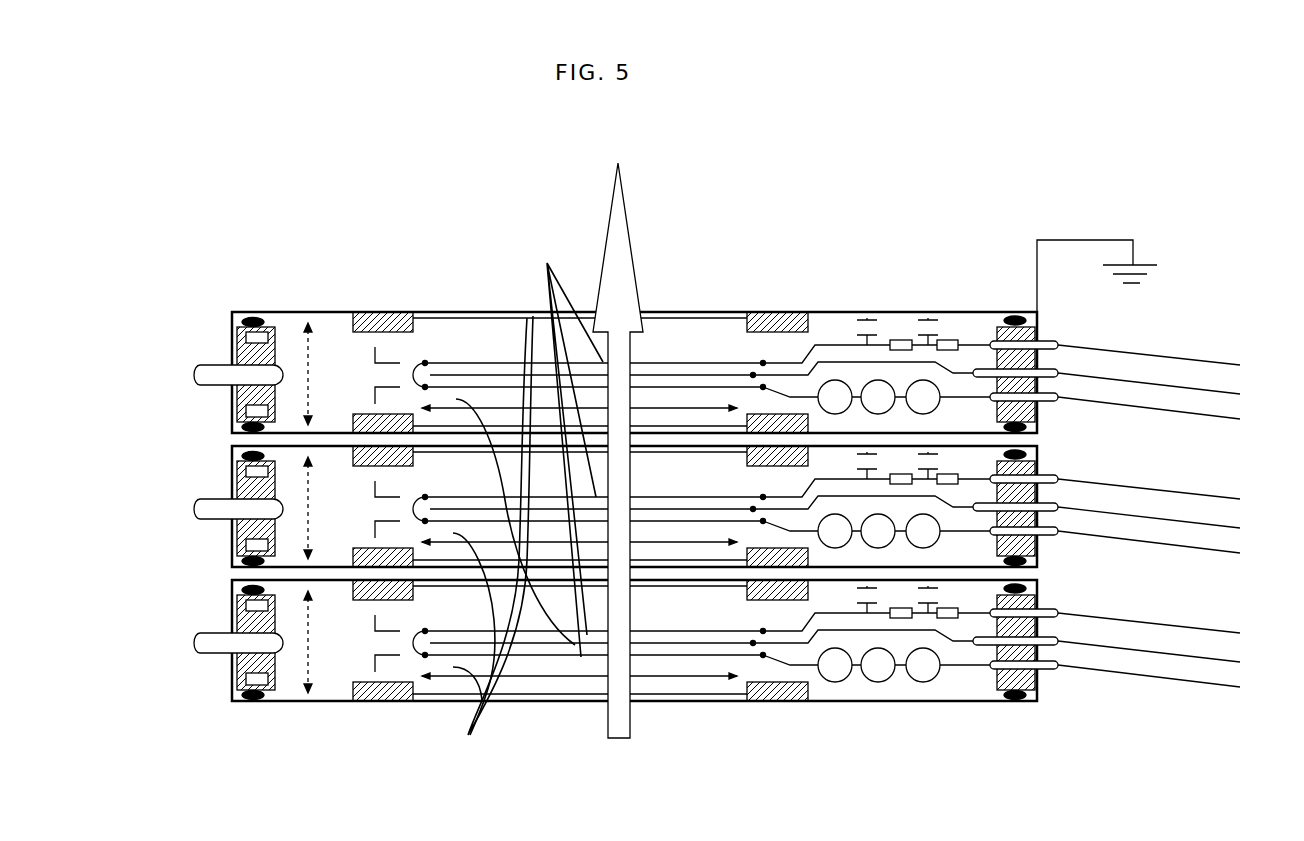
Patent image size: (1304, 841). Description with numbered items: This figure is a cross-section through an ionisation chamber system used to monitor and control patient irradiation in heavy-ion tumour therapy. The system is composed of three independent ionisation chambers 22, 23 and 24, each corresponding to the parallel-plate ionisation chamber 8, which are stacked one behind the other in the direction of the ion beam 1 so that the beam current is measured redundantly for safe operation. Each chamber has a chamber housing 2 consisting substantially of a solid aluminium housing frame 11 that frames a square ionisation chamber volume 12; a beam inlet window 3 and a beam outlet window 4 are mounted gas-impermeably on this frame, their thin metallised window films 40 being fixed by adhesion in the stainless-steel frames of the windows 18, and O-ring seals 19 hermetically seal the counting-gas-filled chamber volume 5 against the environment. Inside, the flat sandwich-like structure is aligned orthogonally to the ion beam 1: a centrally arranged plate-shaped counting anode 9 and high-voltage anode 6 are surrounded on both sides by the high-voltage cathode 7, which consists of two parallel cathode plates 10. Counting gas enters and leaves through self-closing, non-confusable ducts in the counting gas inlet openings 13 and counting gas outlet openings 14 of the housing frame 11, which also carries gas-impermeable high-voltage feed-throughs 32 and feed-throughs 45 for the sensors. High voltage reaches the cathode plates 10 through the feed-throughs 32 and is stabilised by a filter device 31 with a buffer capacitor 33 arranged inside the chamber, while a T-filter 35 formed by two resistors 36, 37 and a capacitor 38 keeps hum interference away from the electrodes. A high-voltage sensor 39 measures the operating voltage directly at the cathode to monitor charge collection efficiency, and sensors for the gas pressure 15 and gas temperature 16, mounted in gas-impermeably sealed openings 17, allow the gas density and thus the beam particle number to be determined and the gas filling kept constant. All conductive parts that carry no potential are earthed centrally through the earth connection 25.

The ion beam 1 is at (618, 750).
The chamber housing 2 is at (773, 313).
The beam inlet window 3 is at (530, 703).
The beam outlet window 4 is at (456, 313).
The chamber volume 5 is at (490, 545).
The high-voltage anode 6 is at (589, 506).
The high-voltage cathode 7 is at (564, 447).
The parallel-plate ionisation chamber 8 is at (880, 216).
The counting anode 9 is at (523, 345).
The cathode plates 10 is at (564, 447).
The housing frame 11 is at (232, 359).
The ionisation chamber volume 12 is at (490, 545).
The counting gas inlet openings 13 is at (1124, 508).
The counting gas outlet openings 14 is at (200, 375).
The sensor for gas pressure 15 is at (876, 682).
The sensor for gas temperature 16 is at (921, 682).
The gas-impermeably sealed openings 17 is at (935, 697).
The frames of the windows 18 is at (290, 312).
The O-ring seals 19 is at (237, 312).
The ionisation chamber 22 is at (238, 671).
The ionisation chamber 23 is at (238, 537).
The ionisation chamber 24 is at (238, 403).
The earth connection 25 is at (1133, 250).
The filter device 31 is at (855, 330).
The high-voltage feed-throughs 32 is at (1132, 495).
The buffer capacitor 33 is at (878, 322).
The T-filter 35 is at (950, 336).
The resistor 36 is at (903, 338).
The resistor 37 is at (960, 345).
The capacitor 38 is at (938, 318).
The high-voltage sensor 39 is at (836, 682).
The window films 40 is at (690, 314).
The feed-throughs for the sensors 45 is at (1132, 551).